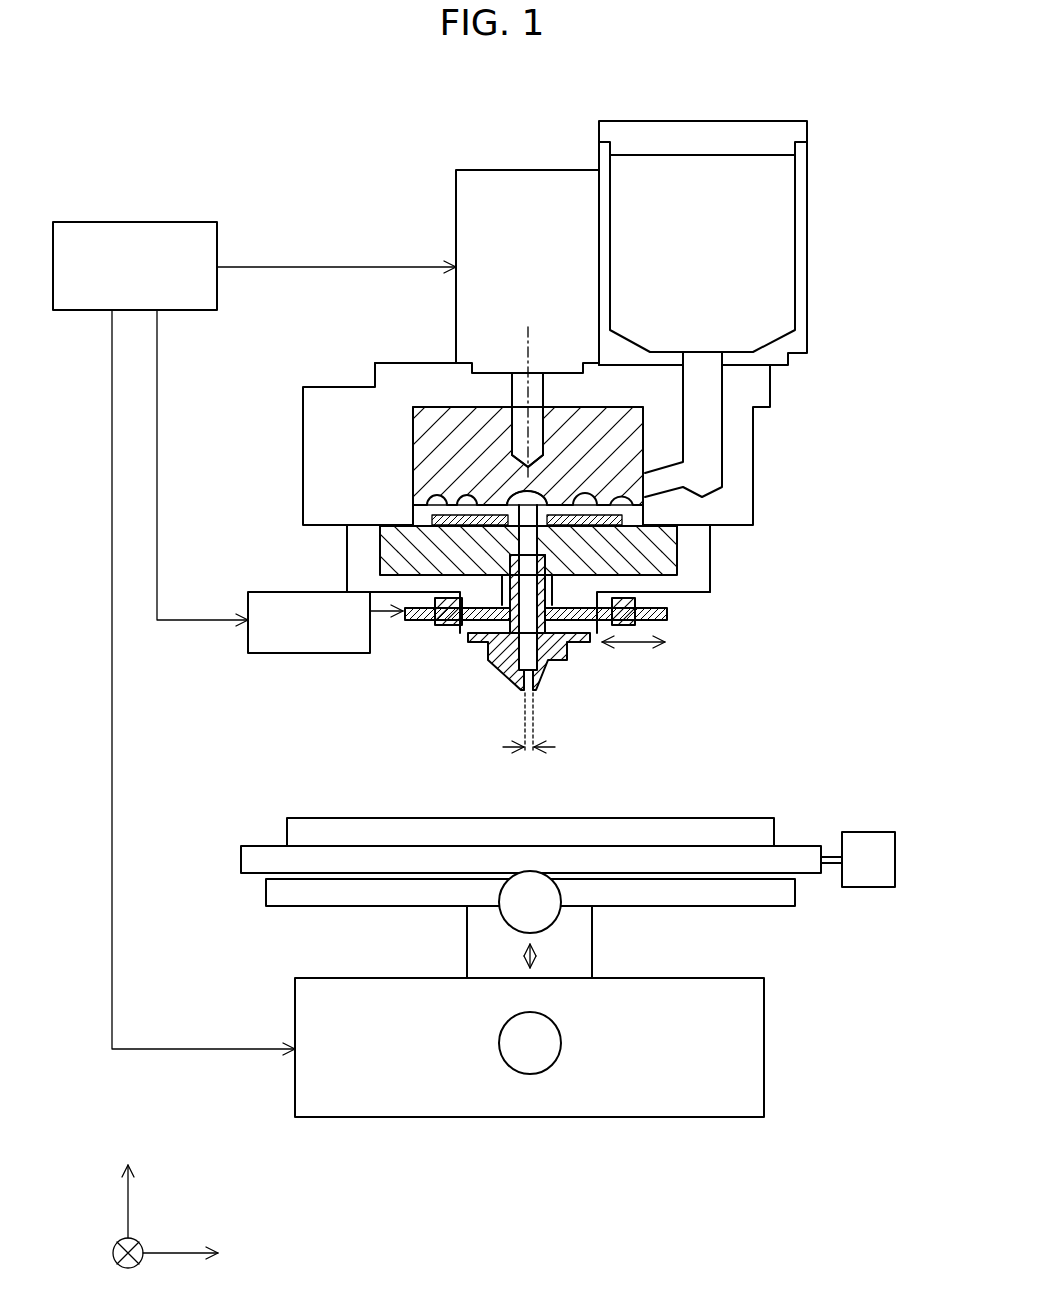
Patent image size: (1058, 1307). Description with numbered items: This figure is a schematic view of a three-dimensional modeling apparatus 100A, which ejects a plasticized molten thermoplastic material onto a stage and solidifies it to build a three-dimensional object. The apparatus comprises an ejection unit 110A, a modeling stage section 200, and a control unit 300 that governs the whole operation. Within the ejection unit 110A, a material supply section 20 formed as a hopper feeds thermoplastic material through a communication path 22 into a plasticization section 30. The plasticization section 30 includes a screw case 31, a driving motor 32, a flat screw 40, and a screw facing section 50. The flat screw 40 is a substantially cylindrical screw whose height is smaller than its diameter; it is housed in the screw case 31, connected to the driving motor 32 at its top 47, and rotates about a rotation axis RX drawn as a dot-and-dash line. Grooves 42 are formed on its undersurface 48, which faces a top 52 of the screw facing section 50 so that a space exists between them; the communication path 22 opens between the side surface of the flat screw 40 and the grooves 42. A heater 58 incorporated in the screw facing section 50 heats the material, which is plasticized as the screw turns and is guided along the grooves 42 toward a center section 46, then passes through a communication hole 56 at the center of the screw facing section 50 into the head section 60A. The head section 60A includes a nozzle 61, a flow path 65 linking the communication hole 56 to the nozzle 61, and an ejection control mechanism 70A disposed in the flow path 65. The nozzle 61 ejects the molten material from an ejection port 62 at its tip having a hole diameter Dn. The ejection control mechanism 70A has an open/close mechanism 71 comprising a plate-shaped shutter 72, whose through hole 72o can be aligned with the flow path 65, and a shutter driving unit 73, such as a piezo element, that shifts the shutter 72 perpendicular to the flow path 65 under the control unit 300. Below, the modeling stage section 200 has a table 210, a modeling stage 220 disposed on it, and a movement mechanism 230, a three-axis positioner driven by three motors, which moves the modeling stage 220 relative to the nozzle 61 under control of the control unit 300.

The three-dimensional modeling apparatus 100A is at (173, 113).
The ejection unit 110A is at (345, 122).
The control unit 300 is at (118, 222).
The material supply section 20 is at (807, 232).
The communication path 22 is at (700, 428).
The plasticization section 30 is at (353, 232).
The screw case 31 is at (423, 363).
The driving motor 32 is at (456, 200).
The rotation axis RX is at (528, 332).
The flat screw 40 is at (513, 443).
The grooves 42 is at (510, 490).
The center section 46 is at (513, 468).
The top 47 is at (447, 407).
The undersurface 48 is at (505, 502).
The screw facing section 50 is at (397, 550).
The top 52 is at (437, 514).
The communication hole 56 is at (645, 572).
The heater 58 is at (655, 560).
The head section 60A is at (747, 664).
The nozzle 61 is at (510, 678).
The ejection port 62 is at (533, 703).
The flow path 65 is at (548, 586).
The hole diameter Dn is at (529, 736).
The ejection control mechanism 70A is at (358, 675).
The open/close mechanism 71 is at (457, 644).
The shutter 72 is at (427, 621).
The through hole 72o is at (490, 656).
The shutter driving unit 73 is at (310, 655).
The modeling stage section 200 is at (860, 793).
The table 210 is at (276, 842).
The modeling stage 220 is at (713, 816).
The movement mechanism 230 is at (820, 957).